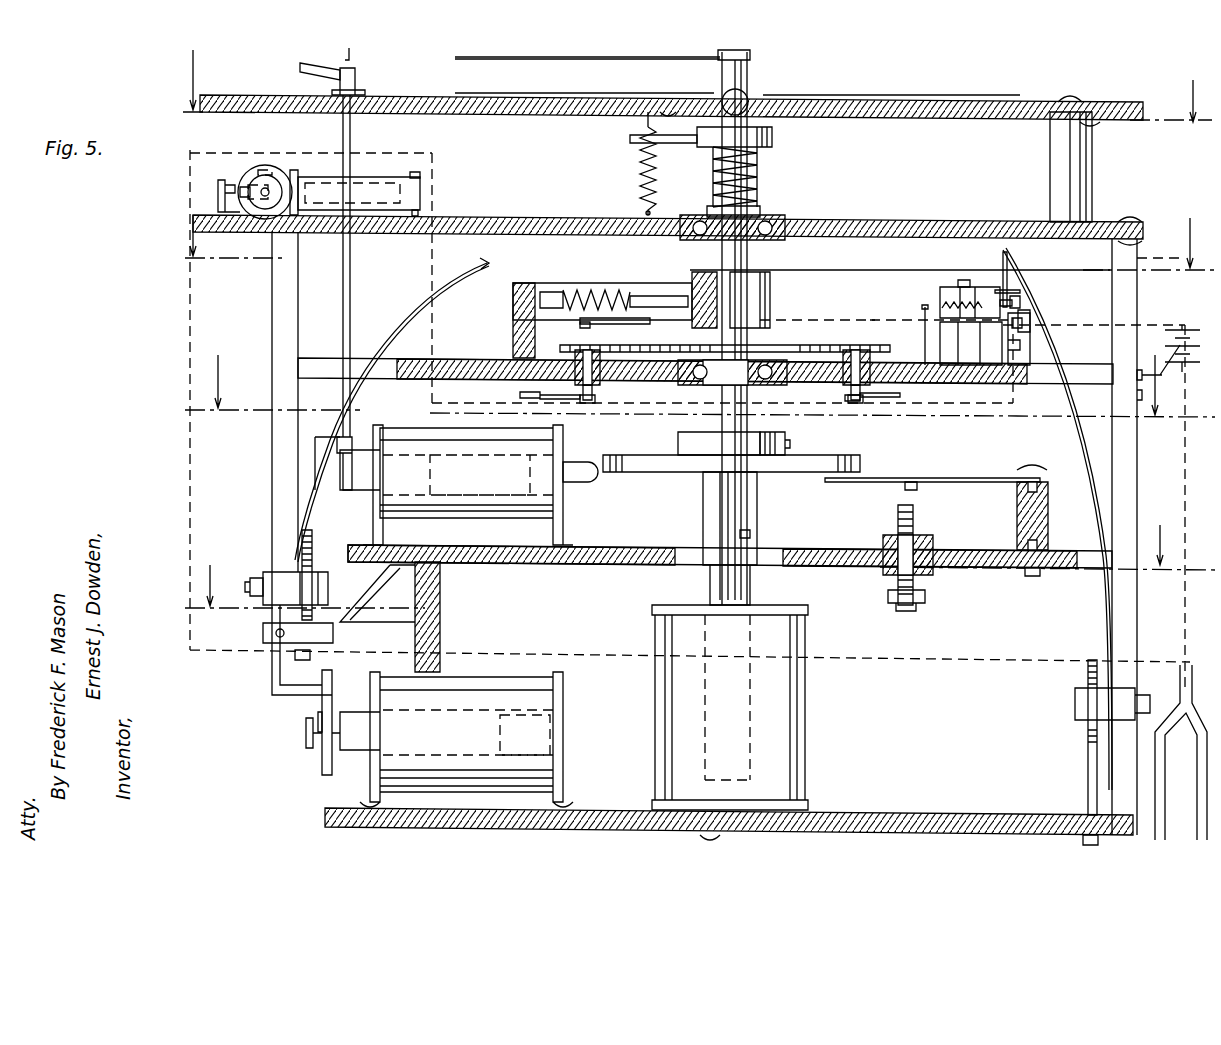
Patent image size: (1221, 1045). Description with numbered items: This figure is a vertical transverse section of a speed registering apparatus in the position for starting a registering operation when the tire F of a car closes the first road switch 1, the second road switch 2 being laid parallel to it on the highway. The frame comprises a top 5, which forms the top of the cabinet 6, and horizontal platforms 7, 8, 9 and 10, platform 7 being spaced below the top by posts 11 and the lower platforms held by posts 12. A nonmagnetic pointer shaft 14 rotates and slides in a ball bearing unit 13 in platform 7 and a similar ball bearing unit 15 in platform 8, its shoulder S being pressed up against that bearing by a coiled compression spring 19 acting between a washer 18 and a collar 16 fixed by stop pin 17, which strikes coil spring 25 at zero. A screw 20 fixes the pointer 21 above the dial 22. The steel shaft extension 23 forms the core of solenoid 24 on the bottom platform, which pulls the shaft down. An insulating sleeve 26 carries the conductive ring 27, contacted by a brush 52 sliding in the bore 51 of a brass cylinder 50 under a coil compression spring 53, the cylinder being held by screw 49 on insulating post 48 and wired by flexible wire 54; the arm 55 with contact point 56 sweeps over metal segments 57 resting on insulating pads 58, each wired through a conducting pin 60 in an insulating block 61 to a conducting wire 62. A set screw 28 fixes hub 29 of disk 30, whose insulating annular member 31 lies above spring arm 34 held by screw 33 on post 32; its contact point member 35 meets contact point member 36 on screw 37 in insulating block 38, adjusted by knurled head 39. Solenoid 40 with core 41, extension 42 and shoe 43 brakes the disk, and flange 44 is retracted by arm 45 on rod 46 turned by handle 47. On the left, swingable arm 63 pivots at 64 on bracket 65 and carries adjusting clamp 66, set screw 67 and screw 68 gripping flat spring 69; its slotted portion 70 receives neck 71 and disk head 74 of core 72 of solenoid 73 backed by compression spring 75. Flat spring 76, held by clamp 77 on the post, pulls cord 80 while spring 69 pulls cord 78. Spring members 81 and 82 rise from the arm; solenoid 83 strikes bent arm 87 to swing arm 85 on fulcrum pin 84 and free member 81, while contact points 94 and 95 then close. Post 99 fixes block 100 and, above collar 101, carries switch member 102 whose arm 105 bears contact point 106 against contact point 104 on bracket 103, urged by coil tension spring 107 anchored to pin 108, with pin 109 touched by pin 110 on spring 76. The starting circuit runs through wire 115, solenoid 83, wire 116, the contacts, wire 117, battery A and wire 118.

The first road switch 1 is at (1197, 745).
The second road switch 2 is at (1158, 780).
The top 5 is at (950, 102).
The cabinet 6 is at (697, 86).
The platform 7 is at (860, 222).
The platform 8 is at (470, 370).
The platform 9 is at (545, 578).
The platform 10 is at (975, 800).
The post 11 is at (1090, 158).
The post 12 is at (1125, 447).
The ball bearing unit 13 is at (790, 212).
The pointer shaft 14 is at (752, 88).
The ball bearing unit 15 is at (732, 385).
The collar 16 is at (775, 137).
The stop pin 17 is at (672, 143).
The washer 18 is at (765, 205).
The coiled compression spring 19 is at (762, 165).
The screw 20 is at (752, 54).
The pointer 21 is at (548, 60).
The dial 22 is at (608, 90).
The shaft extension 23 is at (750, 588).
The solenoid 24 is at (790, 698).
The coil spring 25 is at (640, 165).
The sleeve 26 is at (772, 300).
The ring or sleeve 27 is at (772, 278).
The set screw 28 is at (790, 442).
The hub 29 is at (678, 445).
The disk 30 is at (620, 455).
The annular member 31 is at (632, 472).
The post 32 is at (1017, 502).
The screw 33 is at (1035, 470).
The spring arm 34 is at (940, 478).
The contact point member 35 is at (917, 488).
The contact point member 36 is at (898, 503).
The metal screw 37 is at (915, 520).
The insulating block 38 is at (883, 532).
The knurled head 39 is at (925, 586).
The solenoid 40 is at (505, 518).
The steel core 41 is at (455, 465).
The extension 42 is at (525, 495).
The head or shoe 43 is at (580, 482).
The disk or flange 44 is at (326, 479).
The arm 45 is at (352, 447).
The rod 46 is at (352, 133).
The handle 47 is at (300, 66).
The post or block 48 is at (513, 335).
The metal screw 49 is at (482, 283).
The brass cylinder 50 is at (558, 292).
The bore 51 is at (600, 292).
The brush 52 is at (688, 296).
The coil compression spring 53 is at (640, 296).
The flexible wire 54 is at (513, 318).
The arm 55 is at (838, 320).
The contact point 56 is at (580, 326).
The metal segments 57 is at (612, 345).
The insulating pads 58 is at (575, 355).
The conducting pin 60 is at (875, 400).
The insulating block 61 is at (721, 393).
The conducting wire 62 is at (535, 405).
The swingable arm 63 is at (272, 468).
The pivot 64 is at (270, 643).
The metal bracket 65 is at (425, 606).
The adjusting clamp 66 is at (275, 600).
The set screw 67 is at (252, 578).
The screw 68 is at (312, 530).
The flat spring 69 is at (400, 315).
The downwardly extending portion 70 is at (322, 752).
The neck 71 is at (318, 712).
The core 72 is at (355, 752).
The solenoid 73 is at (535, 690).
The disk head 74 is at (306, 733).
The compression spring 75 is at (563, 722).
The flat spring 76 is at (1050, 345).
The clamp 77 is at (1075, 702).
The cord 78 is at (605, 270).
The cord 80 is at (900, 252).
The flat spring member 81 is at (350, 290).
The flat spring member 82 is at (272, 288).
The solenoid 83 is at (268, 165).
The fulcrum pin 84 is at (420, 178).
The arm 85 is at (395, 178).
The angularly bent arm 87 is at (336, 190).
The contact point 94 is at (245, 186).
The stationary contact point 95 is at (218, 190).
The post 99 is at (962, 280).
The block 100 is at (980, 375).
The collar 101 is at (925, 313).
The switch member 102 is at (975, 295).
The stationary bracket 103 is at (1035, 365).
The stationary contact point 104 is at (1020, 302).
The arm 105 is at (1025, 320).
The contact point 106 is at (1032, 325).
The coil tension spring 107 is at (935, 300).
The pin 108 is at (925, 332).
The pin 109 is at (1020, 290).
The pin or projection 110 is at (1027, 272).
The wire 115 is at (925, 662).
The wire 116 is at (432, 255).
The wire 117 is at (1160, 325).
The wire 118 is at (1185, 490).
The battery A is at (1145, 345).
The tire F is at (1181, 752).
The shoulder S is at (700, 385).